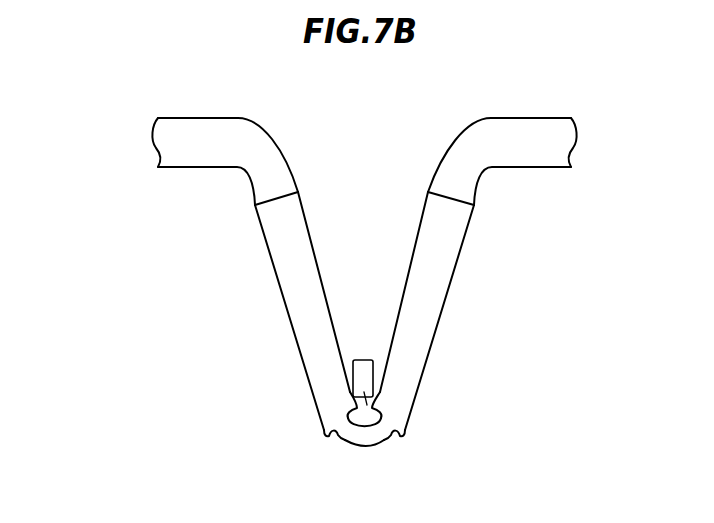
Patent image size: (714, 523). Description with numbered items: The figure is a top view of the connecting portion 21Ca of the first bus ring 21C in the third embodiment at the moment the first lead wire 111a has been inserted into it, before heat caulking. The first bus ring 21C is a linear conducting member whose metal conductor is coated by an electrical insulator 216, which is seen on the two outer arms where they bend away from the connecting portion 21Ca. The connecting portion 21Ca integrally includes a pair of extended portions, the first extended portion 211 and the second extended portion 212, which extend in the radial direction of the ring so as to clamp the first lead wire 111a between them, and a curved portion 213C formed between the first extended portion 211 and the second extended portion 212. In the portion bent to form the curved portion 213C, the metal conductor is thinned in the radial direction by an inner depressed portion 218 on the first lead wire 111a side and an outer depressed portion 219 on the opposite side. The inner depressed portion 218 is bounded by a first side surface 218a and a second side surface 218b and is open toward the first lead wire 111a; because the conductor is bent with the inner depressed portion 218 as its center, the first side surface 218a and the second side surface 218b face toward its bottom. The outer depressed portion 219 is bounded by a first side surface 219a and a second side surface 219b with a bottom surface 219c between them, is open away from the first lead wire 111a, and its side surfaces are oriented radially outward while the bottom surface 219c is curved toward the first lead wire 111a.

The first bus ring 21C is at (117, 90).
The connecting portion 21Ca is at (231, 311).
The first extended portion 211 is at (290, 288).
The second extended portion 212 is at (440, 283).
The electrical insulator 216 is at (528, 133).
The first lead wire 111a is at (364, 372).
The inner depressed portion 218 is at (369, 407).
The first side surface 218a is at (357, 410).
The second side surface 218b is at (376, 411).
The curved portion 213C is at (357, 440).
The outer depressed portion 219 is at (389, 450).
The first side surface 219a is at (332, 437).
The second side surface 219b is at (400, 437).
The bottom surface 219c is at (363, 445).